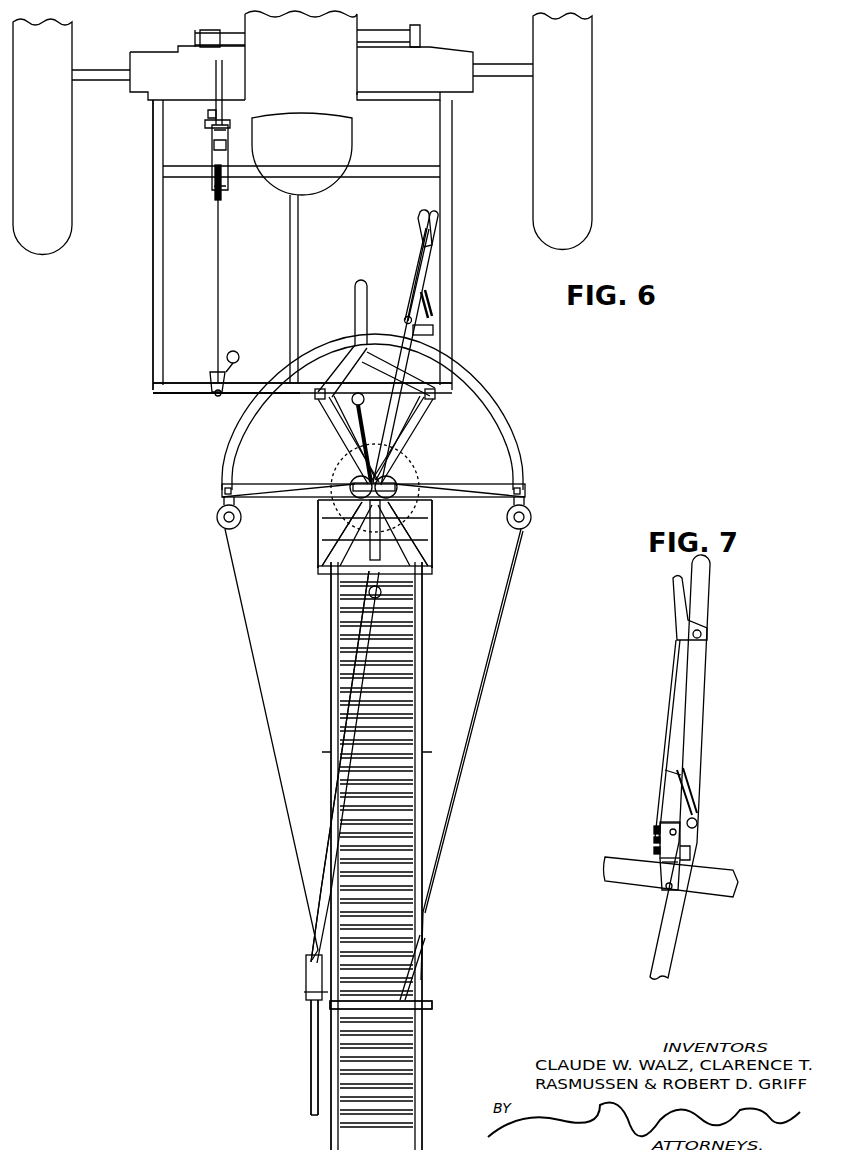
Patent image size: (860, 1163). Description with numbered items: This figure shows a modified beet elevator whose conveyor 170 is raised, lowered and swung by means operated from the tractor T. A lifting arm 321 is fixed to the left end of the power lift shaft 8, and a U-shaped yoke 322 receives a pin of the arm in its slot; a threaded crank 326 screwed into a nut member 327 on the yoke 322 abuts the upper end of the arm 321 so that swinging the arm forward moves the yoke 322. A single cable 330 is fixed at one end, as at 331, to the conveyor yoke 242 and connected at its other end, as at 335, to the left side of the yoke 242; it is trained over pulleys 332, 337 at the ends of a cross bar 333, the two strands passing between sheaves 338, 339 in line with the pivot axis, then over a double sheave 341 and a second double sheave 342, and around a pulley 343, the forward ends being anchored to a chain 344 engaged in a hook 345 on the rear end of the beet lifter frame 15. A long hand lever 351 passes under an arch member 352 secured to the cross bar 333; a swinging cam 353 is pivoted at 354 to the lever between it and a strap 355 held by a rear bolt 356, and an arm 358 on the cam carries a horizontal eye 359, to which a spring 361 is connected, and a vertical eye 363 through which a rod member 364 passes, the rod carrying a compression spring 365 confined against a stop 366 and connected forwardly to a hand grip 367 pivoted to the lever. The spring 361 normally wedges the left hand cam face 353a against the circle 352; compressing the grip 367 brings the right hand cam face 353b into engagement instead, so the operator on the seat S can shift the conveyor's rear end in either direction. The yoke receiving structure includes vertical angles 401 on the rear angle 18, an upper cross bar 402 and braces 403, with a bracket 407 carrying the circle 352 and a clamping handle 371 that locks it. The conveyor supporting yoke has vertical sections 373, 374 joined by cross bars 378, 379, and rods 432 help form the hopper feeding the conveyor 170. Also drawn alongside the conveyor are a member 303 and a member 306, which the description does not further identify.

In FIG. 6, the tractor T is at (432, 45).
In FIG. 6, the beet lifter frame 15 is at (148, 285).
In FIG. 6, the seat S is at (345, 150).
In FIG. 6, the crank 326 is at (222, 80).
In FIG. 6, the power lift shaft 8 is at (208, 114).
In FIG. 6, the nut member 327 is at (213, 127).
In FIG. 6, the U-shaped yoke 322 is at (212, 157).
In FIG. 6, the lifting arm 321 is at (222, 158).
In FIG. 6, the pulley 343 is at (225, 195).
In FIG. 6, the second double sheave 342 is at (236, 351).
In FIG. 6, the chain 344 is at (210, 378).
In FIG. 6, the hook 345 is at (218, 398).
In FIG. 6, the rear angle 18 is at (200, 393).
In FIG. 6, the arch member 352 is at (473, 377).
In FIG. 7, the arch member 352 is at (716, 880).
In FIG. 6, the cross bar 333 is at (522, 485).
In FIG. 6, the pulley 337 is at (222, 535).
In FIG. 6, the pulley 332 is at (530, 520).
In FIG. 6, the cable 330 is at (484, 759).
In FIG. 6, the handle means 371 is at (355, 283).
In FIG. 6, the bracket 407 is at (337, 354).
In FIG. 6, the vertical angles 401 is at (318, 396).
In FIG. 6, the double sheave 341 is at (326, 420).
In FIG. 6, the braces 403 is at (340, 433).
In FIG. 6, the upper cross bar 402 is at (420, 412).
In FIG. 6, the rods 432 is at (415, 459).
In FIG. 6, the sheave 338 is at (350, 480).
In FIG. 6, the sheave 339 is at (400, 476).
In FIG. 6, the hand lever 351 is at (432, 268).
In FIG. 7, the hand lever 351 is at (688, 723).
In FIG. 6, the rod member 364 is at (416, 275).
In FIG. 7, the rod member 364 is at (670, 692).
In FIG. 6, the hand grip 367 is at (420, 230).
In FIG. 7, the hand grip 367 is at (676, 618).
In FIG. 6, the compression spring 365 is at (405, 318).
In FIG. 7, the compression spring 365 is at (654, 831).
In FIG. 6, the spring 361 is at (432, 302).
In FIG. 7, the spring 361 is at (690, 780).
In FIG. 6, the swinging cam 353 is at (433, 329).
In FIG. 7, the swinging cam 353 is at (684, 840).
In FIG. 6, the vertical section of yoke 374 is at (318, 530).
In FIG. 6, the vertical section of yoke 373 is at (432, 535).
In FIG. 6, the cross bar 378 is at (434, 568).
In FIG. 6, the cross bar 379 is at (396, 576).
In FIG. 6, the conveyor 170 is at (443, 942).
In FIG. 6, the rod 303 is at (335, 843).
In FIG. 6, the cable connection 335 is at (306, 998).
In FIG. 6, the cable fixing point 331 is at (413, 993).
In FIG. 6, the yoke 242 is at (400, 1010).
In FIG. 6, the rod 306 is at (311, 1060).
In FIG. 7, the eye 359 is at (694, 818).
In FIG. 7, the arm 358 is at (665, 775).
In FIG. 7, the pivot member 354 is at (670, 828).
In FIG. 7, the eye 363 is at (660, 825).
In FIG. 7, the strap 355 is at (654, 840).
In FIG. 7, the stop 366 is at (654, 850).
In FIG. 7, the right hand cam face 353b is at (690, 856).
In FIG. 7, the left hand cam face 353a is at (662, 866).
In FIG. 7, the rear bolt 356 is at (665, 892).